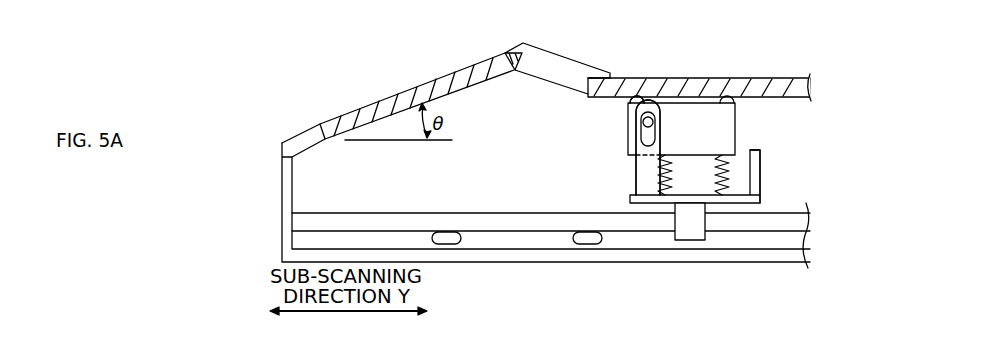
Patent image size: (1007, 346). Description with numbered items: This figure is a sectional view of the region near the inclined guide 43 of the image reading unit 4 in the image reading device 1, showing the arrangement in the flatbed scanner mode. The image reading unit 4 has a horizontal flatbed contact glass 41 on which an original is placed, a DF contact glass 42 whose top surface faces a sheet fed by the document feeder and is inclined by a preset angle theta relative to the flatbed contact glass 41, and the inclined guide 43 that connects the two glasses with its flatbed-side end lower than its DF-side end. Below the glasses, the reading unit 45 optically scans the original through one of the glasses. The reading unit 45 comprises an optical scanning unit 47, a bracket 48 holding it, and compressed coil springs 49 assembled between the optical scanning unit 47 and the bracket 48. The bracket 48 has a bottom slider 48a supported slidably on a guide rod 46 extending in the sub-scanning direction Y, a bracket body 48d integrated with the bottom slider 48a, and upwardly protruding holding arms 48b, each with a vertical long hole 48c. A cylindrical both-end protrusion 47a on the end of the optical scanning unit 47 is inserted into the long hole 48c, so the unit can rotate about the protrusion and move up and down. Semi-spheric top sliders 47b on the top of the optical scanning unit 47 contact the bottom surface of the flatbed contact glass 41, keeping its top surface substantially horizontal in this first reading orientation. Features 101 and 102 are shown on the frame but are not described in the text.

The image reading device 1 is at (243, 190).
The image reading unit 4 is at (456, 50).
The flatbed contact glass 41 is at (762, 80).
The DF contact glass 42 is at (398, 92).
The inclined guide 43 is at (558, 52).
The reading unit 45 is at (770, 148).
The guide rod 46 is at (451, 213).
The optical scanning unit 47 is at (735, 118).
The both-end protrusion 47a is at (648, 117).
The top slider 47b is at (634, 100).
The bracket 48 is at (762, 163).
The bottom slider 48a is at (688, 240).
The holding arm 48b is at (636, 177).
The long hole 48c is at (642, 141).
The bracket body 48d is at (760, 186).
The compressed coil spring 49 is at (677, 178).
The positioning hole 101 is at (588, 244).
The positioning hole 102 is at (447, 244).